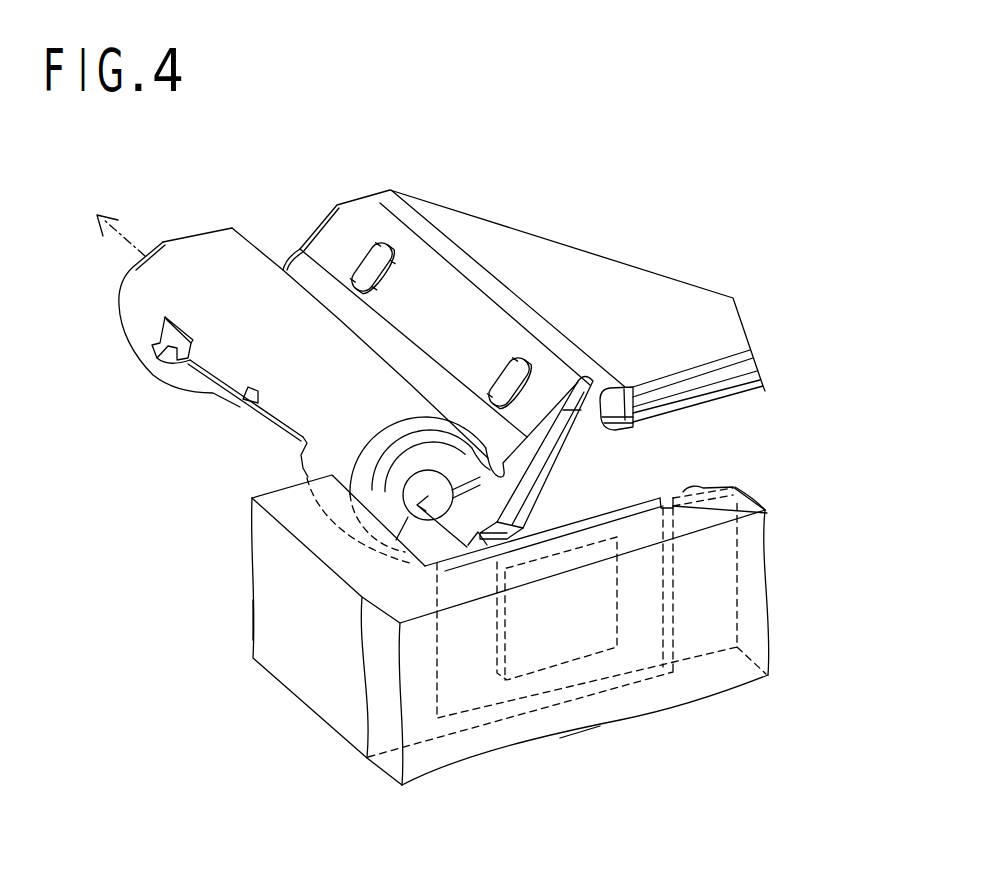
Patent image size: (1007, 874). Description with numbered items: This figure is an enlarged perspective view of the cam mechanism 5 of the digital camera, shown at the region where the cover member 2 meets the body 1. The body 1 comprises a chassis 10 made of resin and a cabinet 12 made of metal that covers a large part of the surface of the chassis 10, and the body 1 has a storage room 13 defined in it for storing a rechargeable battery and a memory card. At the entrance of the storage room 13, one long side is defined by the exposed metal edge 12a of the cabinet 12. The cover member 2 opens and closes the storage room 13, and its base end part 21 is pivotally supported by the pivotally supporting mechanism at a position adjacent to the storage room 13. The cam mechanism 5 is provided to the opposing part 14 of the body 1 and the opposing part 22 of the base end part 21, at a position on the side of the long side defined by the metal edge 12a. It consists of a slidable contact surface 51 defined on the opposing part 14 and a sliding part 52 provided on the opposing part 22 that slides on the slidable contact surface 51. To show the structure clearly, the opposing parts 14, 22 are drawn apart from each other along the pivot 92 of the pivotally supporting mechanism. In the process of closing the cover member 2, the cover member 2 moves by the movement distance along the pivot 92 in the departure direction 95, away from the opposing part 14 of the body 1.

The body 1 is at (558, 600).
The cover member 2 is at (625, 252).
The cam mechanism 5 is at (554, 481).
The chassis 10 is at (318, 667).
The cabinet 12 is at (723, 670).
The edge 12a is at (745, 492).
The storage room 13 is at (719, 469).
The opposing part 14 is at (643, 532).
The base end part 21 is at (250, 267).
The opposing part 22 is at (502, 497).
The slidable contact surface 51 is at (538, 545).
The sliding part 52 is at (548, 478).
The pivot 92 is at (474, 548).
The departure direction 95 is at (428, 535).